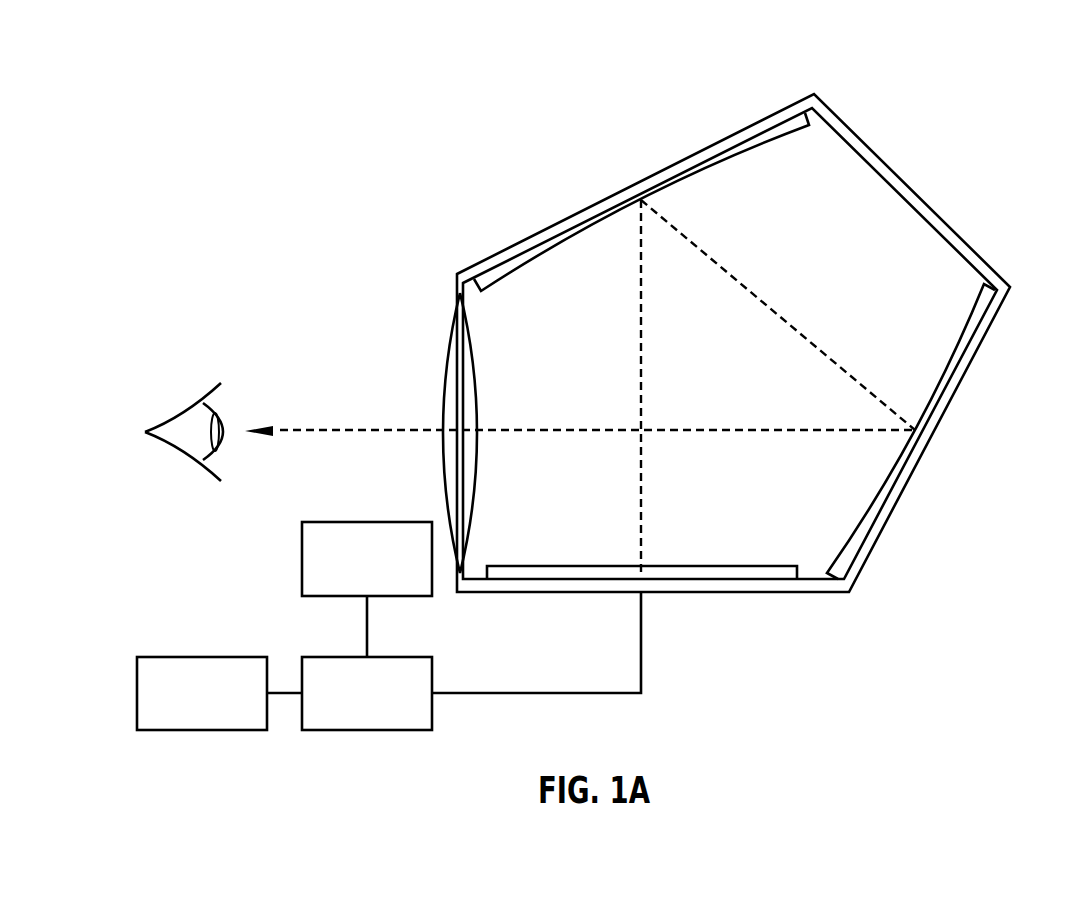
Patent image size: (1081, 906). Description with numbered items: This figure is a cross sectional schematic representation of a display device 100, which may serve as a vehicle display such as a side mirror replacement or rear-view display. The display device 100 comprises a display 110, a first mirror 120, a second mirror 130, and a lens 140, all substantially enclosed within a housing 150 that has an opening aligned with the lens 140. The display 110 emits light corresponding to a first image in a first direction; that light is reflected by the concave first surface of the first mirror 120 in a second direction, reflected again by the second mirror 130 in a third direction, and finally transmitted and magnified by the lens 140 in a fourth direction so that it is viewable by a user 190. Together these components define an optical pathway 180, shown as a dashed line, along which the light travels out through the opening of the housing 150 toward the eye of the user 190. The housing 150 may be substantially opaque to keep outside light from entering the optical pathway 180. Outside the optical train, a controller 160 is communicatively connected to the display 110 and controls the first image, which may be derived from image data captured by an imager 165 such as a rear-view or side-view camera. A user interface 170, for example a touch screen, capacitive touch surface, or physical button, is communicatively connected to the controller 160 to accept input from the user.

The display device 100 is at (423, 88).
The display 110 is at (753, 570).
The first mirror 120 is at (774, 133).
The second mirror 130 is at (975, 308).
The lens 140 is at (459, 347).
The housing 150 is at (876, 150).
The controller 160 is at (413, 657).
The imager 165 is at (330, 522).
The user interface 170 is at (215, 657).
The optical pathway 180 is at (366, 430).
The user 190 is at (181, 399).